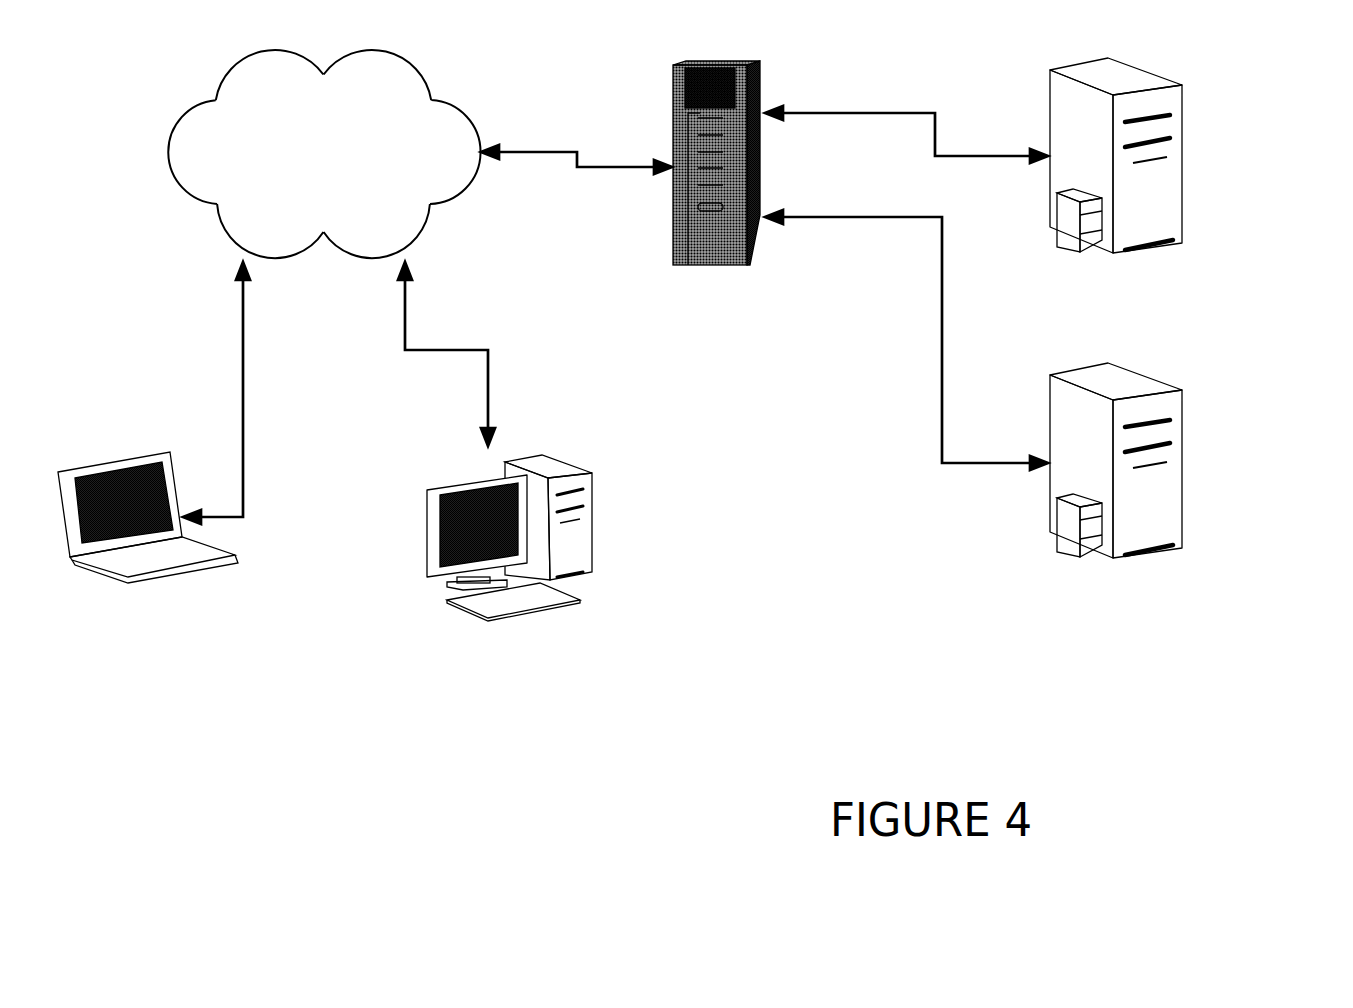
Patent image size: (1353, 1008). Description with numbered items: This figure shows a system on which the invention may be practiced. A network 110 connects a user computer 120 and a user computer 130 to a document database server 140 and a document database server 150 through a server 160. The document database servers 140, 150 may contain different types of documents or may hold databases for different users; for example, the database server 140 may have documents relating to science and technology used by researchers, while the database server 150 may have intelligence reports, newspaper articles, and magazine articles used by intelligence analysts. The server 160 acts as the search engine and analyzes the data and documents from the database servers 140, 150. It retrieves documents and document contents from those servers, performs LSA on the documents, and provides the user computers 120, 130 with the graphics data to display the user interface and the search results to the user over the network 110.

The network 110 is at (324, 154).
The user computer 120 is at (154, 595).
The user computer 130 is at (515, 637).
The document database server 140 is at (1198, 155).
The document database server 150 is at (1032, 514).
The server 160 is at (725, 285).